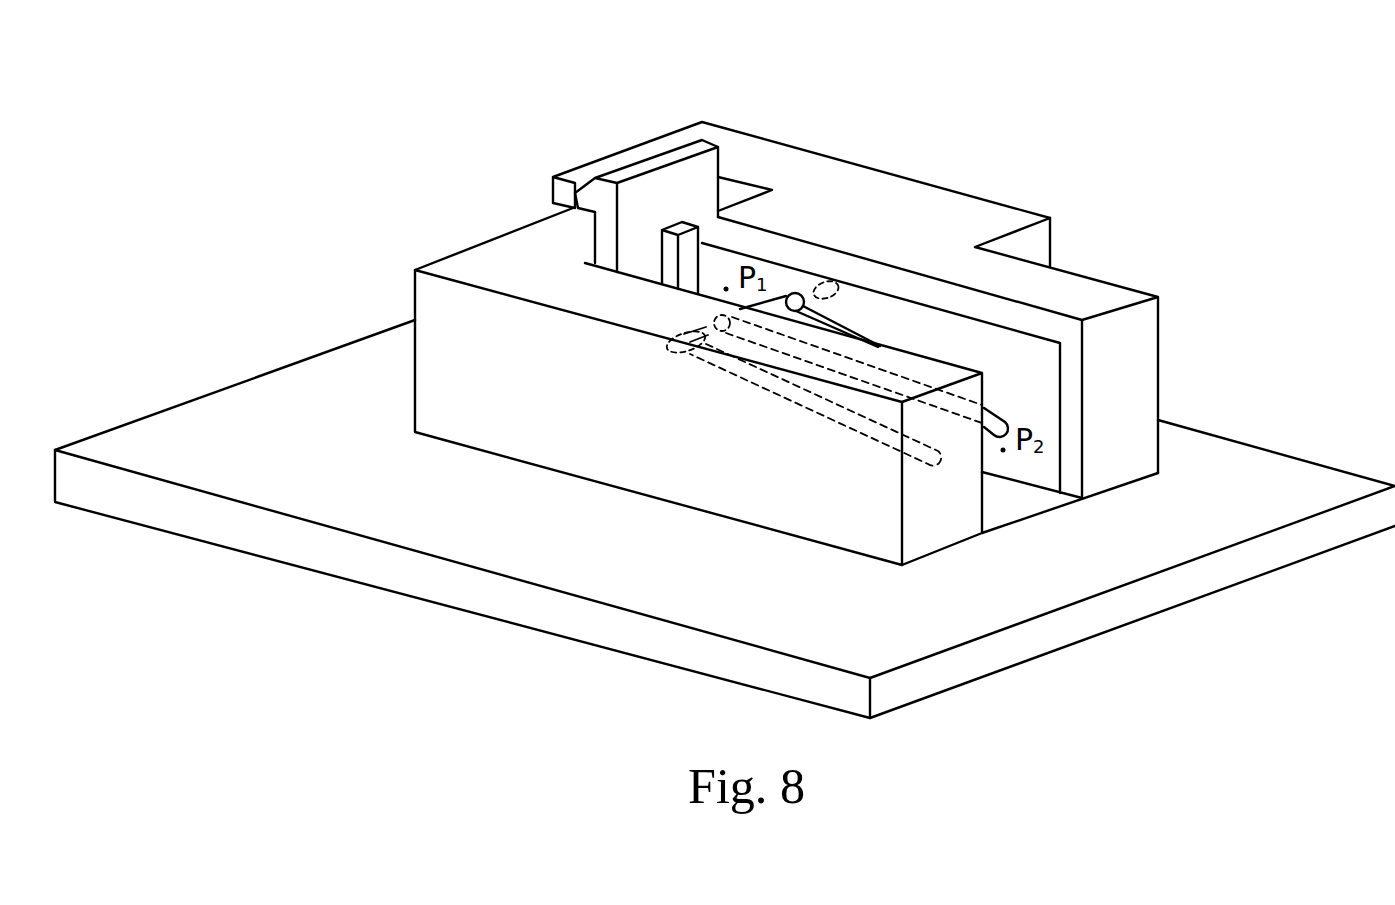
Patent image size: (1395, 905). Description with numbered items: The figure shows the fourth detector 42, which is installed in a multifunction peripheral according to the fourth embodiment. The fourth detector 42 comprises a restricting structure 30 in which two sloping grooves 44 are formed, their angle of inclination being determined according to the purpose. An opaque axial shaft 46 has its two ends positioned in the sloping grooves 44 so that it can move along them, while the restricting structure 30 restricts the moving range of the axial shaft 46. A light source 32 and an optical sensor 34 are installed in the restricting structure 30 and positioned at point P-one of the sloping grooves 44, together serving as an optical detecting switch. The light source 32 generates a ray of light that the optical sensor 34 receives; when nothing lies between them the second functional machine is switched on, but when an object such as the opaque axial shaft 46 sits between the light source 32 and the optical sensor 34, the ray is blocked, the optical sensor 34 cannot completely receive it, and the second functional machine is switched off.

The restricting structure 30 is at (1158, 358).
The light source 32 is at (707, 348).
The optical sensor 34 is at (836, 299).
The fourth detector 42 is at (1165, 125).
The sloping grooves 44 is at (1012, 420).
The axial shaft 46 is at (792, 297).